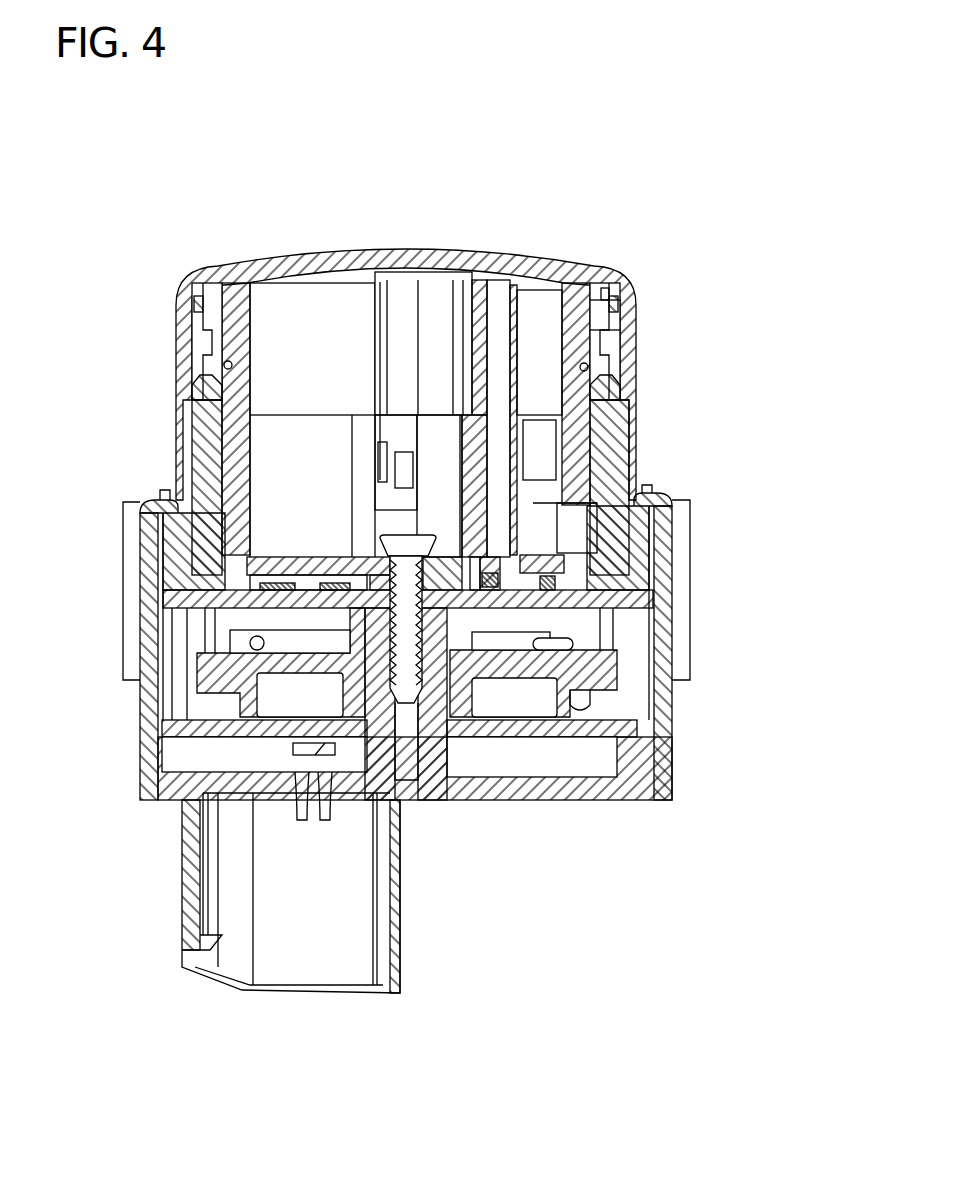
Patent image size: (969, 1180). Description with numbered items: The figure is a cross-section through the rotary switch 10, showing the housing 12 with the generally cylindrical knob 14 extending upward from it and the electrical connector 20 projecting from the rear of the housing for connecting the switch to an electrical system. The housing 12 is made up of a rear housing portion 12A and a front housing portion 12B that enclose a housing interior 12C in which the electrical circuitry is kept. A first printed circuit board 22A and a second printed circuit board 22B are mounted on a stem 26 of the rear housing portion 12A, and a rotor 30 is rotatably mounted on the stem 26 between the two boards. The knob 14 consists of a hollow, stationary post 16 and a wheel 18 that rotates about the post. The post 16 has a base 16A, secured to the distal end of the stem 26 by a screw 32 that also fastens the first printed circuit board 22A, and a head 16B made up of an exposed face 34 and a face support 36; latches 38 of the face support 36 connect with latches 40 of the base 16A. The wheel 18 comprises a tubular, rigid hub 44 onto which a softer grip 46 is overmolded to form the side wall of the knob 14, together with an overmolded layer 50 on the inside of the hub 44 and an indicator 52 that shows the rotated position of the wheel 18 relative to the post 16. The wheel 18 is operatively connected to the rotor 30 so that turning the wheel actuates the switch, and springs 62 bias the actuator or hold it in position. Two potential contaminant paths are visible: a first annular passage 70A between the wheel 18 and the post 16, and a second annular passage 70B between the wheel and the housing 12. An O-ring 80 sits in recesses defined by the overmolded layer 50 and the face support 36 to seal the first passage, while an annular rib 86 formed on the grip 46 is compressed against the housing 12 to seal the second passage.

The switch 10 is at (730, 163).
The housing 12 is at (405, 635).
The rear housing portion 12A is at (512, 797).
The front housing portion 12B is at (658, 700).
The housing interior 12C is at (282, 540).
The knob 14 is at (412, 359).
The post 16 is at (422, 371).
The base 16A is at (256, 537).
The head 16B is at (555, 256).
The wheel 18 is at (638, 282).
The electrical connector 20 is at (401, 945).
The first printed circuit board 22A is at (618, 585).
The second printed circuit board 22B is at (585, 752).
The stem 26 is at (455, 762).
The rotor 30 is at (620, 672).
The screw 32 is at (421, 540).
The face 34 is at (418, 244).
The face support 36 is at (585, 310).
The latches 38 is at (397, 438).
The latches 40 is at (392, 482).
The hub 44 is at (208, 432).
The grip 46 is at (637, 415).
The overmolded layer 50 is at (222, 378).
The indicator 52 is at (603, 298).
The springs 62 is at (206, 627).
The first annular passage 70A is at (226, 262).
The second annular passage 70B is at (173, 500).
The O-ring 80 is at (255, 362).
The annular rib 86 is at (165, 513).